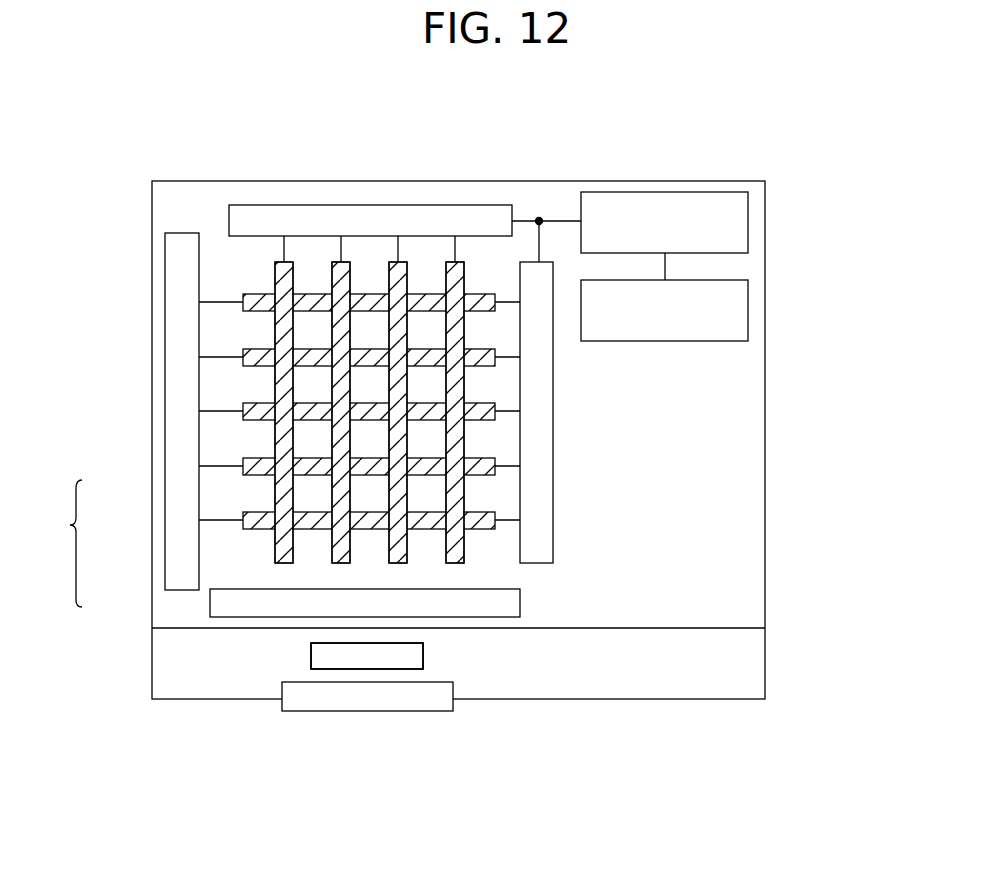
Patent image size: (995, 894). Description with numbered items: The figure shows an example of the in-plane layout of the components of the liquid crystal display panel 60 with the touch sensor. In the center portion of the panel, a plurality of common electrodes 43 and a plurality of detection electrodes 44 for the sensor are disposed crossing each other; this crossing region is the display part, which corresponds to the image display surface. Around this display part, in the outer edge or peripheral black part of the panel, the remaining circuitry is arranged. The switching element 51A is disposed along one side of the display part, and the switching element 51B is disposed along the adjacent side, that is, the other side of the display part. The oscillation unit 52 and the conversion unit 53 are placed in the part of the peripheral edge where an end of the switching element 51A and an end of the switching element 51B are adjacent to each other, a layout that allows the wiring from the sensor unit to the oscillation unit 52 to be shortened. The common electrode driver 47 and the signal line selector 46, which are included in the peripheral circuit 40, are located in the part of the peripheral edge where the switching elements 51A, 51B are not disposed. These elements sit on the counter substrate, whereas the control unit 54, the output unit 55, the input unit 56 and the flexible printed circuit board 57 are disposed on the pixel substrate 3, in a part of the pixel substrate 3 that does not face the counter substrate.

The pixel substrate 3 is at (750, 665).
The liquid crystal display panel with the touch sensor 60 is at (617, 153).
The peripheral circuit 40 is at (61, 543).
The common electrode driver 47 is at (165, 487).
The signal line selector 46 is at (210, 604).
The switching element 51A is at (352, 205).
The switching element 51B is at (553, 398).
The common electrodes 43 is at (482, 528).
The detection electrodes 44 is at (458, 562).
The oscillation unit 52 is at (748, 222).
The conversion unit 53 is at (748, 305).
The control unit 54 is at (423, 657).
The output unit 55 is at (367, 656).
The input unit 56 is at (367, 656).
The flexible printed circuit board 57 is at (323, 711).